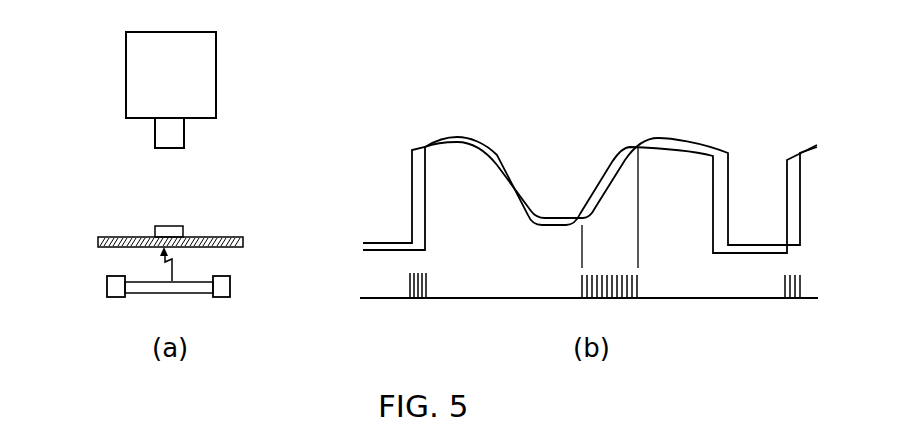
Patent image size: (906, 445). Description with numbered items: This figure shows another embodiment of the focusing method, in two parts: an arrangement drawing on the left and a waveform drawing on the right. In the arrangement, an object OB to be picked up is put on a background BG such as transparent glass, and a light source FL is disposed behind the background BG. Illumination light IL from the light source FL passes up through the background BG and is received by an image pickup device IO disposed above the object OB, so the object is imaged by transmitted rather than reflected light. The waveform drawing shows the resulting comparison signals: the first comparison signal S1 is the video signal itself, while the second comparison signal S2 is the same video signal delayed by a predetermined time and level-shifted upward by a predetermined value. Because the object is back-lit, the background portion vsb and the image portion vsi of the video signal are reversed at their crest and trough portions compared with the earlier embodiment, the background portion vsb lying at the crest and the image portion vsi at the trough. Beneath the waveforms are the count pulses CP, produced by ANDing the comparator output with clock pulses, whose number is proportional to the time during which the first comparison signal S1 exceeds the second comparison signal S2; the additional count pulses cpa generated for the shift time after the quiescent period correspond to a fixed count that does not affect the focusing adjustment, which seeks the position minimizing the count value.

The image pickup device IO is at (216, 81).
The background BG is at (117, 237).
The object OB is at (173, 226).
The illumination light IL is at (158, 262).
The light source FL is at (230, 283).
The first comparison signal S1 is at (490, 152).
The second comparison signal S2 is at (513, 162).
The background portion of video signal vsb is at (455, 135).
The image portion of video signal vsi is at (536, 218).
The additional count pulses cpa is at (428, 285).
The count pulses CP is at (639, 283).